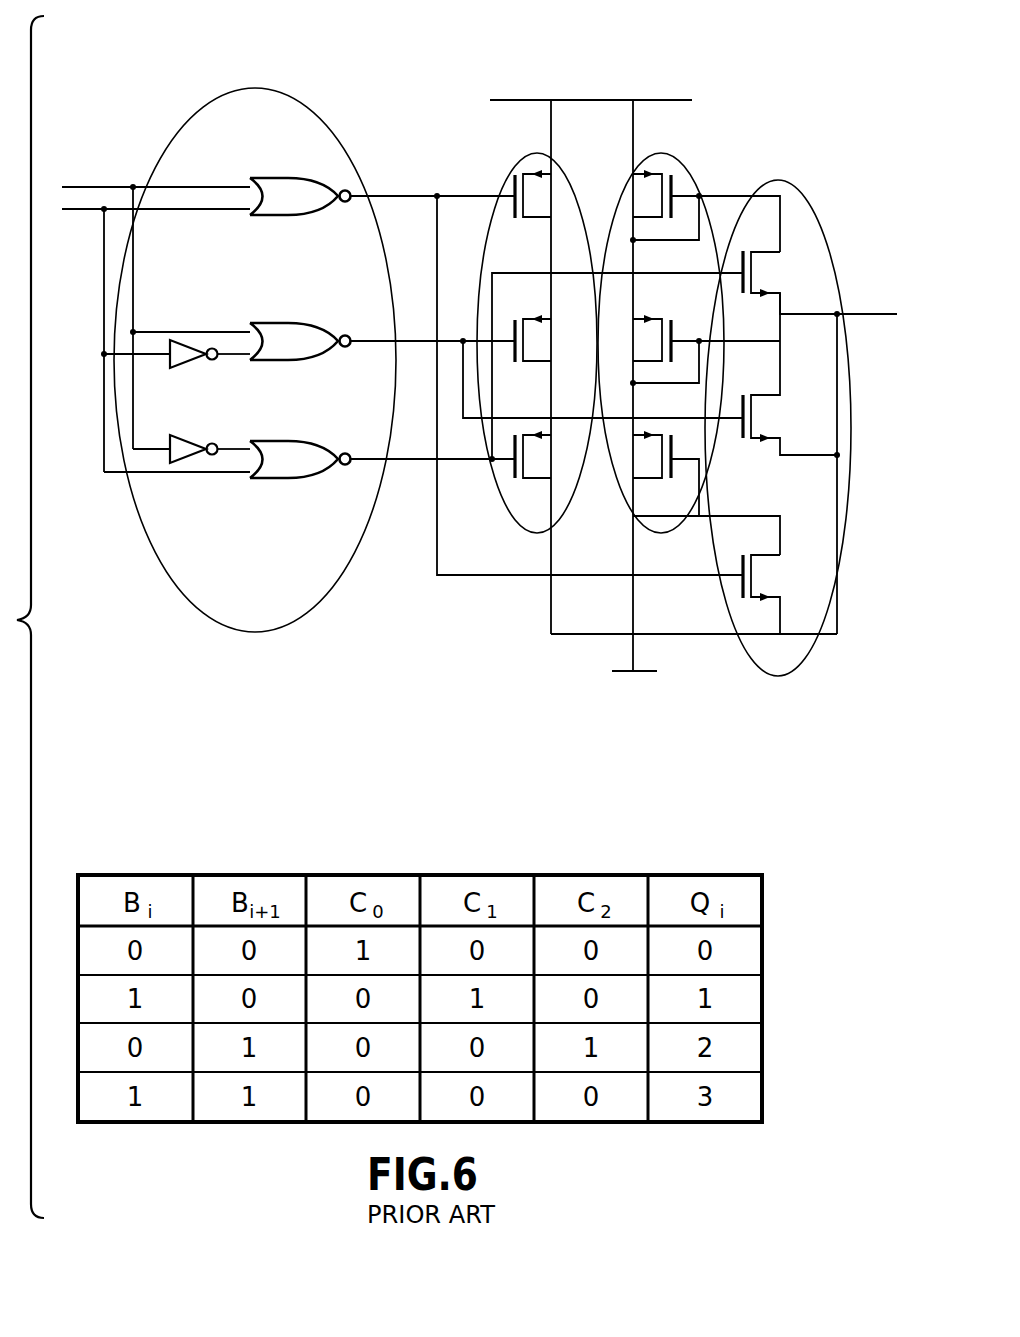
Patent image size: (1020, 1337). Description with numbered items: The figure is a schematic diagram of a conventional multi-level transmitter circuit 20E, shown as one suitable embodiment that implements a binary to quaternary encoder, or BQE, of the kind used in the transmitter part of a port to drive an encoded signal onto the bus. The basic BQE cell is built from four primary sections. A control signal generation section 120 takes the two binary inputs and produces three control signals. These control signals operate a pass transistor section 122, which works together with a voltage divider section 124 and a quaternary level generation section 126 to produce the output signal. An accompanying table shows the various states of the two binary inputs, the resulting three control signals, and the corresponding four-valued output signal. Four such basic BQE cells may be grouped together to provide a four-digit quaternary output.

The multi-level transmitter circuit 20E is at (803, 158).
The control signal generation section 120 is at (170, 583).
The pass transistor section 122 is at (512, 169).
The voltage divider section 124 is at (690, 148).
The quaternary level generation section 126 is at (745, 652).